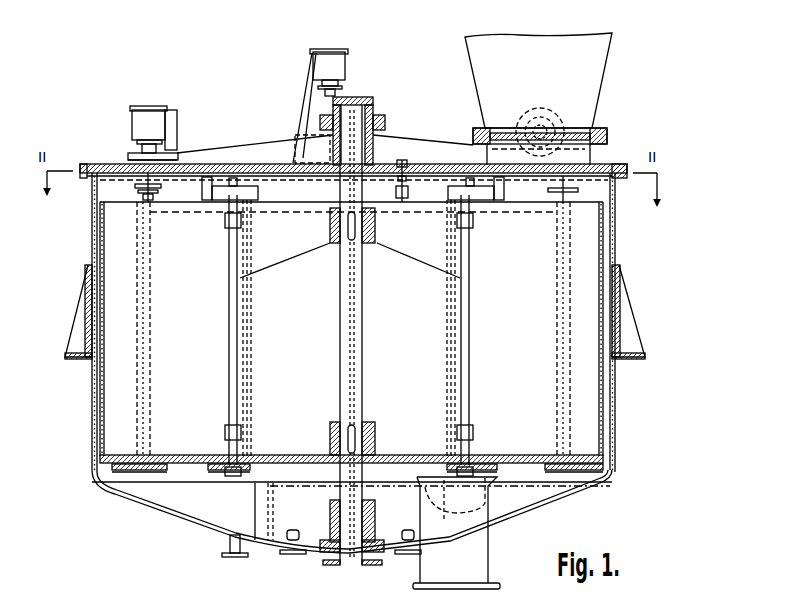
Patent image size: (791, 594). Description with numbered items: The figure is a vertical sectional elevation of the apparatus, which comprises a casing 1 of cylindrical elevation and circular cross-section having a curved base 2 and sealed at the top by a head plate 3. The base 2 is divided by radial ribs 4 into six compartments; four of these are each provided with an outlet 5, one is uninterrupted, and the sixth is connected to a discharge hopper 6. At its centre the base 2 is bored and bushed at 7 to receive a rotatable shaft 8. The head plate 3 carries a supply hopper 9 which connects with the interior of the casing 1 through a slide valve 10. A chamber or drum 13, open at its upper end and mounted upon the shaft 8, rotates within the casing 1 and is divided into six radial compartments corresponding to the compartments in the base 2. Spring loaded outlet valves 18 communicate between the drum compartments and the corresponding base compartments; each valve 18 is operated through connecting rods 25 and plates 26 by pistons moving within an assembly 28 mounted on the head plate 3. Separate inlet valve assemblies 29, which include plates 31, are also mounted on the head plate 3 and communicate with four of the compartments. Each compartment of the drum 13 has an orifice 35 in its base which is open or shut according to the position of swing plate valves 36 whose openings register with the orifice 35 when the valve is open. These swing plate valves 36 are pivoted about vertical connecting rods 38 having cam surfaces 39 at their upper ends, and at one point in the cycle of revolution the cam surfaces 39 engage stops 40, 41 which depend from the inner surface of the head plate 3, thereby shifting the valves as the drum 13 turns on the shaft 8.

The casing 1 is at (615, 249).
The curved base 2 is at (556, 512).
The head plate 3 is at (612, 164).
The radial ribs 4 is at (254, 517).
The outlet 5 is at (240, 557).
The discharge hopper 6 is at (480, 560).
The bush 7 is at (366, 563).
The rotatable shaft 8 is at (357, 334).
The supply hopper 9 is at (605, 74).
The slide valve 10 is at (593, 130).
The chamber or drum 13 is at (603, 258).
The spring loaded outlet valves 18 is at (131, 447).
The connecting rods 25 is at (155, 253).
The plates 26 is at (160, 188).
The assembly 28 is at (158, 106).
The inlet valve assemblies 29 is at (345, 50).
The plates 31 is at (345, 97).
The orifice 35 is at (160, 457).
The swing plate valves 36 is at (193, 471).
The vertical connecting rods 38 is at (229, 322).
The cam surfaces 39 is at (214, 201).
The stop 40 is at (409, 193).
The stop 41 is at (397, 179).